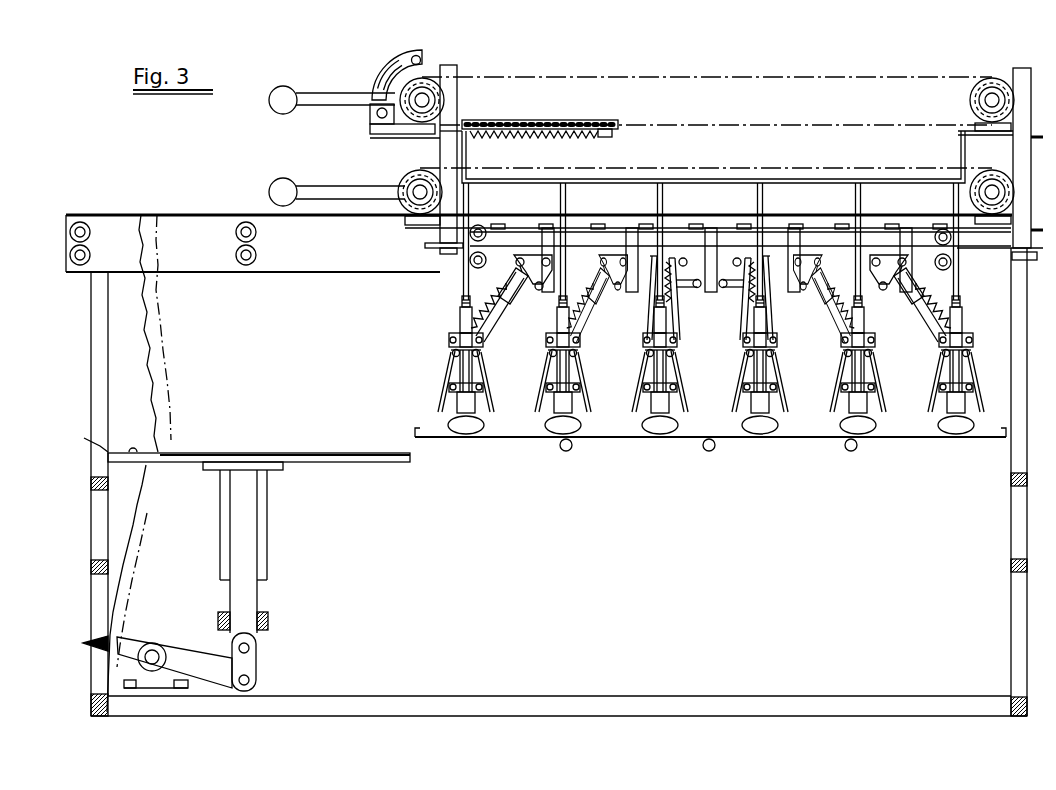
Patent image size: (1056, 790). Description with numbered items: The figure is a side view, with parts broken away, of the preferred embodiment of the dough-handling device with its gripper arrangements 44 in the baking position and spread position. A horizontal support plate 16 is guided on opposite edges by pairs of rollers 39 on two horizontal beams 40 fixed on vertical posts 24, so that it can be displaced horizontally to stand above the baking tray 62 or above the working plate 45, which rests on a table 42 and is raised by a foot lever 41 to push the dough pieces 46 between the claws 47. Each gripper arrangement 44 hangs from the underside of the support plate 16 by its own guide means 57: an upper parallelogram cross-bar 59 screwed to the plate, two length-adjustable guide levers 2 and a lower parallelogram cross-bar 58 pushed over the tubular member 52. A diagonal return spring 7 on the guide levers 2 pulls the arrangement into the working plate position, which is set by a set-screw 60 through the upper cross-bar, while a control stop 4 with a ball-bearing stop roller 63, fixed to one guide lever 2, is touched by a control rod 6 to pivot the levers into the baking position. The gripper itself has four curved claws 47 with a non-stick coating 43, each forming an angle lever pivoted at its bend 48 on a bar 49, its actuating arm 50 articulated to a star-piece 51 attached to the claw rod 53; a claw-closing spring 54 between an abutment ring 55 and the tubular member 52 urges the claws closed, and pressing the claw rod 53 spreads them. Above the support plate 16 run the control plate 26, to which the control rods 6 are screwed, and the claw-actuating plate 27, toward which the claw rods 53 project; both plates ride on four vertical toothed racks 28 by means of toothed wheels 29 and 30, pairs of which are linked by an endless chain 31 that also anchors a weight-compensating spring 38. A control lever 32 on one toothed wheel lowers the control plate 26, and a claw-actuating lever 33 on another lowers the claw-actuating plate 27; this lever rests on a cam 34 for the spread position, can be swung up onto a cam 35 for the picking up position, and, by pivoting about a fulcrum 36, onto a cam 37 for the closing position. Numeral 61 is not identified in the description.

The guide lever 2 is at (741, 308).
The control stop 4 is at (888, 291).
The control rod 6 is at (868, 238).
The return spring 7 is at (845, 312).
The support plate 16 is at (428, 244).
The post 24 is at (100, 399).
The control plate 26 is at (606, 228).
The claw-actuating plate 27 is at (726, 157).
The toothed rack 28 is at (447, 152).
The toothed wheel 29 is at (440, 86).
The toothed wheel 30 is at (418, 212).
The endless chain 31 is at (706, 99).
The control lever 32 is at (310, 187).
The claw-actuating lever 33 is at (332, 70).
The cam for the spread position 34 is at (374, 117).
The cam for the picking up position 35 is at (390, 72).
The fulcrum 36 is at (397, 124).
The cam for the closing position 37 is at (406, 36).
The compensating spring 38 is at (553, 133).
The pair of rollers 39 is at (88, 250).
The beam 40 is at (539, 276).
The foot lever 41 is at (195, 663).
The table 42 is at (296, 545).
The coating 43 is at (708, 469).
The gripper arrangement 44 is at (492, 373).
The working plate 45 is at (247, 430).
The dough piece 46 is at (453, 466).
The claw 47 is at (592, 408).
The bend 48 is at (582, 386).
The bar 49 is at (580, 366).
The actuating arm 50 is at (549, 403).
The star-piece 51 is at (543, 437).
The tubular member 52 is at (549, 326).
The claw rod 53 is at (562, 292).
The claw-closing spring 54 is at (575, 313).
The abutment ring 55 is at (582, 291).
The guide means 57 is at (726, 329).
The lower parallelogram cross-bar 58 is at (743, 338).
The upper parallelogram cross-bar 59 is at (737, 250).
The set-screw for the working plate position 60 is at (820, 252).
The lifting rod 61 is at (850, 252).
The baking tray 62 is at (614, 446).
The stop roller 63 is at (878, 291).